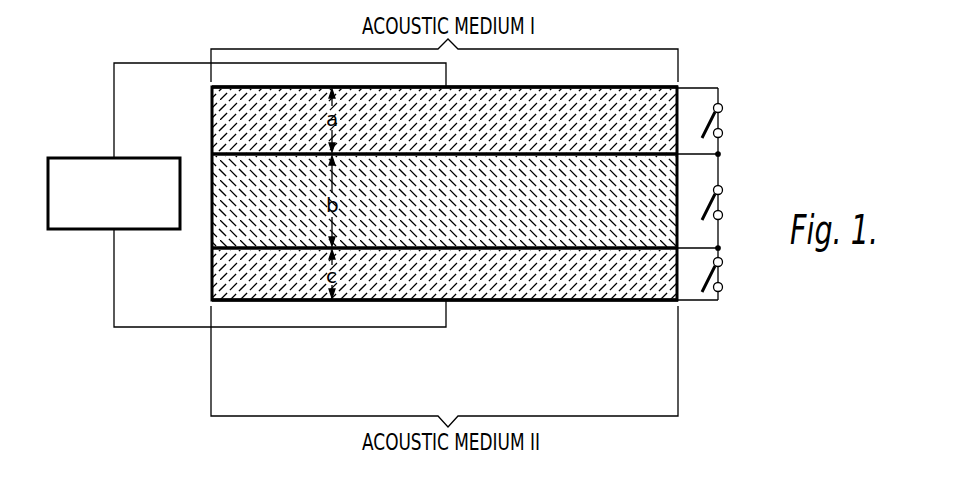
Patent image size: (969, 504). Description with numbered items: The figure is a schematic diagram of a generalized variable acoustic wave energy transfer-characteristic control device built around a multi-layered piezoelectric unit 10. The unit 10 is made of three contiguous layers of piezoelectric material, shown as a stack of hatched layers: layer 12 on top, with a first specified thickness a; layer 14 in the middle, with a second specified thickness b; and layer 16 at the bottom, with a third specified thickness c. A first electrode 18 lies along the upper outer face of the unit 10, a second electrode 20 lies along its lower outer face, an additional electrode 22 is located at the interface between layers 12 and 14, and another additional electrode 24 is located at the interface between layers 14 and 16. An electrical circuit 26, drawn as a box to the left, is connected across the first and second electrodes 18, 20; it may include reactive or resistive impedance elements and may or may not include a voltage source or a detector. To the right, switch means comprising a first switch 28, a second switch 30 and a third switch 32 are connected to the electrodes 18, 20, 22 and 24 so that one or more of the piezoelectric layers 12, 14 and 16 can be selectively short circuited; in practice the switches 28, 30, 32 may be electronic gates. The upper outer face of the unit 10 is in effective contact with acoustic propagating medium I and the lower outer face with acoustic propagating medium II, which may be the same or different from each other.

The multi-layered piezoelectric unit 10 is at (560, 304).
The piezoelectric layer 12 is at (543, 62).
The piezoelectric layer 14 is at (575, 178).
The piezoelectric layer 16 is at (622, 304).
The first electrode 18 is at (491, 62).
The second electrode 20 is at (527, 304).
The additional electrode 22 is at (217, 150).
The additional electrode 24 is at (218, 239).
The electrical circuit 26 is at (88, 158).
The first switch 28 is at (708, 126).
The second switch 30 is at (708, 208).
The third switch 32 is at (708, 280).